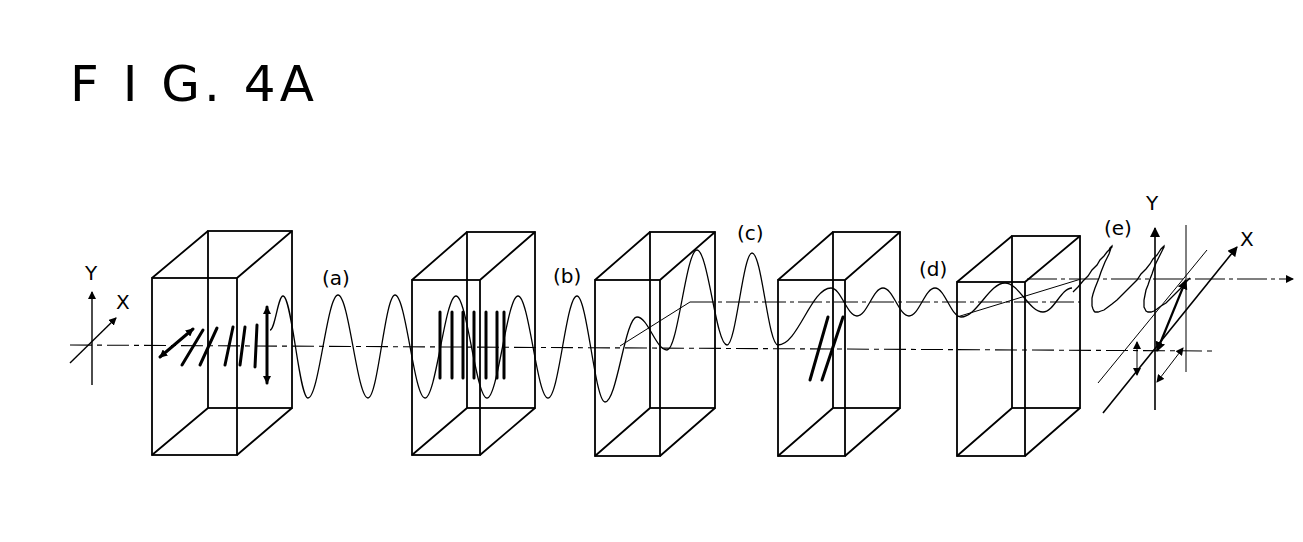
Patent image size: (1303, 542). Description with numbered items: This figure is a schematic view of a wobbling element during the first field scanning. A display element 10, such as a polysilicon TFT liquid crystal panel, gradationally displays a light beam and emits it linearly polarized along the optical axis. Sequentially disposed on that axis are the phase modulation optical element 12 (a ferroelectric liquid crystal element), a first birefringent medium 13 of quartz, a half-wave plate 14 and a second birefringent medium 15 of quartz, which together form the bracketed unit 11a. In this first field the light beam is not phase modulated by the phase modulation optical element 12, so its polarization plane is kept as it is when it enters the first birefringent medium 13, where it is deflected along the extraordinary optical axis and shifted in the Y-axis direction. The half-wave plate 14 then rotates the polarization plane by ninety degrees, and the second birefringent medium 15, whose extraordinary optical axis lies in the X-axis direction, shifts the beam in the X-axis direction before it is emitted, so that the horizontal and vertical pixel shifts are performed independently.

The display element 10 is at (182, 242).
The optical isolator unit 11a is at (1087, 143).
The phase modulation optical element 12 is at (438, 240).
The first birefringent medium 13 is at (631, 240).
The half-wave plate 14 is at (826, 236).
The second birefringent medium 15 is at (992, 240).